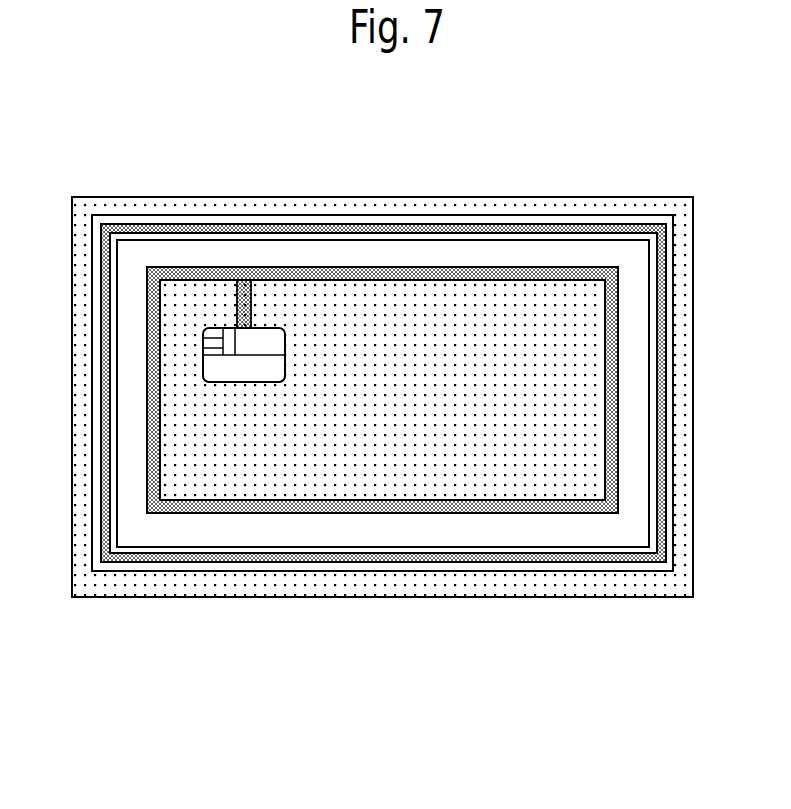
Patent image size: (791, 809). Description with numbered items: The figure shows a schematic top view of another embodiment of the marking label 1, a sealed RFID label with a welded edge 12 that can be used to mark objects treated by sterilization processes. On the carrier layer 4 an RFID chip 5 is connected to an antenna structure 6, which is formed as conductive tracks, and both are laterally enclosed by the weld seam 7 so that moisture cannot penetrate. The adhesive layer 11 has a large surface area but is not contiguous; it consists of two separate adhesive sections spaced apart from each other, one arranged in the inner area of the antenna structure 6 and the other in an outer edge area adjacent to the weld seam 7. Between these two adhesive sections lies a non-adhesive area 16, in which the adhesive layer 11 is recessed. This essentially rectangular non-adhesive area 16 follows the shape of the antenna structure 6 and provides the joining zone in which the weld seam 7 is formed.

The marking label 1 is at (139, 152).
The carrier layer 4 is at (476, 194).
The RFID chip 5 is at (217, 358).
The antenna structure 6 is at (612, 380).
The weld seam 7 is at (303, 562).
The adhesive layer 11 is at (484, 480).
The welded edge 12 is at (590, 194).
The non-adhesive area 16 is at (620, 567).